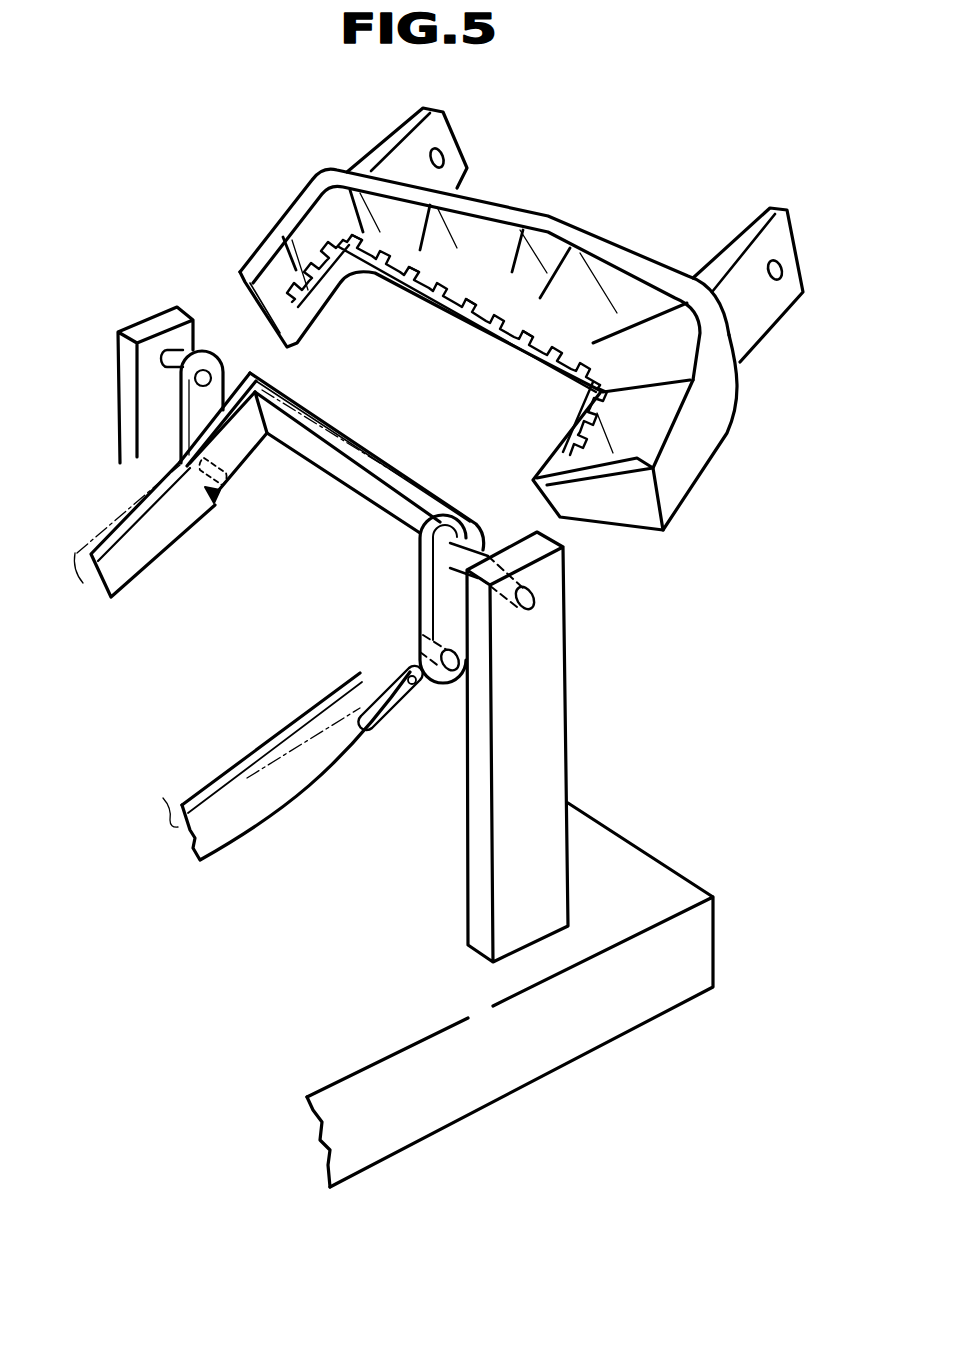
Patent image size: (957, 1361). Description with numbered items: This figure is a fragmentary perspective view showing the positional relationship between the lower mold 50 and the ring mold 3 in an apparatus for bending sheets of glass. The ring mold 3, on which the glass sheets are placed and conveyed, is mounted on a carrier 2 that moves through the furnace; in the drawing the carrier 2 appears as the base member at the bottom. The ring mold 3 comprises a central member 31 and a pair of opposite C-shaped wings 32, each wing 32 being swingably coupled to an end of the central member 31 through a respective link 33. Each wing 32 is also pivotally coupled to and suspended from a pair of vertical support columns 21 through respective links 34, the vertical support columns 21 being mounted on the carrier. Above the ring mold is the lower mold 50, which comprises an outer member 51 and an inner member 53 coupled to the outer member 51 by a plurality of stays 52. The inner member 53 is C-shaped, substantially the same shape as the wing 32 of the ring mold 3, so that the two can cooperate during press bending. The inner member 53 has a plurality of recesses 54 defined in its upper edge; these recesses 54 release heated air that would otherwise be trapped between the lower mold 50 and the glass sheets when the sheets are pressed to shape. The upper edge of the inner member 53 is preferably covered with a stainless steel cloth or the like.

The carrier 2 is at (658, 896).
The ring mold 3 is at (306, 586).
The vertical support column 21 is at (123, 403).
The central member 31 is at (253, 793).
The C-shaped wing 32 is at (383, 473).
The link 33 is at (218, 497).
The link 34 is at (177, 397).
The lower mold 50 is at (523, 312).
The outer member 51 is at (620, 249).
The stay 52 is at (663, 353).
The inner member 53 is at (513, 322).
The recess 54 is at (430, 268).